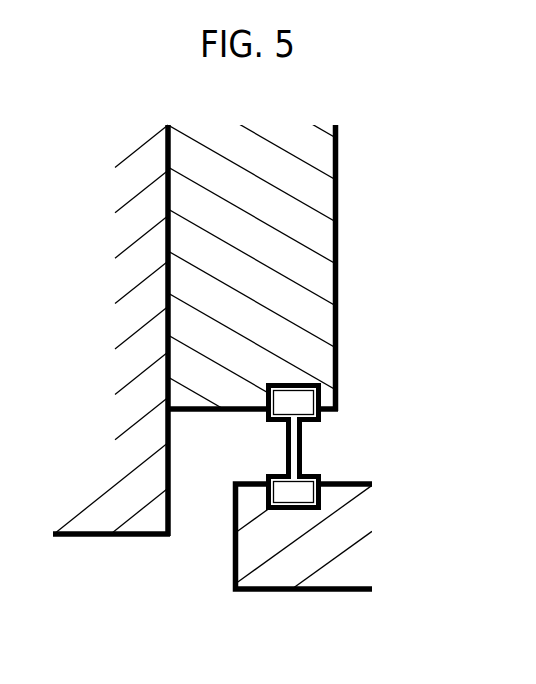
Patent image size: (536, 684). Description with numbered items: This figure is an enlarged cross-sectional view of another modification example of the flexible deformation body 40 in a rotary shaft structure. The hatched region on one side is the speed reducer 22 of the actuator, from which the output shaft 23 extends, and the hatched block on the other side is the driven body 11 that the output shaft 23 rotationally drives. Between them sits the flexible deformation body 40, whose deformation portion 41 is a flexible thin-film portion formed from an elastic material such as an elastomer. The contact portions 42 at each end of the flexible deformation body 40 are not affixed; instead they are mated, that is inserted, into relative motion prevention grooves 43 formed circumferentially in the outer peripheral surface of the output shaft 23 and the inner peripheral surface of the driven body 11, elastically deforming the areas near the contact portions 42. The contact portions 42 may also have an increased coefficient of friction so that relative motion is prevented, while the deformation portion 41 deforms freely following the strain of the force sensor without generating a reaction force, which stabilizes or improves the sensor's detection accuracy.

The driven body 11 is at (280, 573).
The speed reducer 22 is at (101, 520).
The output shaft 23 is at (317, 232).
The flexible deformation body 40 is at (308, 462).
The deformation portion 41 is at (287, 448).
The contact portion 42 is at (300, 379).
The relative motion prevention groove 43 is at (305, 419).